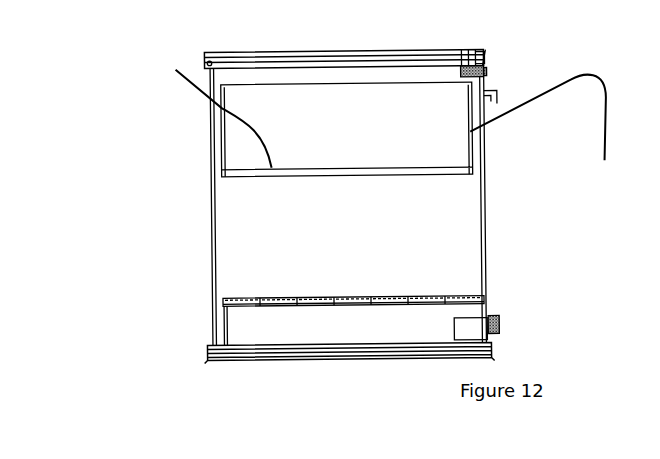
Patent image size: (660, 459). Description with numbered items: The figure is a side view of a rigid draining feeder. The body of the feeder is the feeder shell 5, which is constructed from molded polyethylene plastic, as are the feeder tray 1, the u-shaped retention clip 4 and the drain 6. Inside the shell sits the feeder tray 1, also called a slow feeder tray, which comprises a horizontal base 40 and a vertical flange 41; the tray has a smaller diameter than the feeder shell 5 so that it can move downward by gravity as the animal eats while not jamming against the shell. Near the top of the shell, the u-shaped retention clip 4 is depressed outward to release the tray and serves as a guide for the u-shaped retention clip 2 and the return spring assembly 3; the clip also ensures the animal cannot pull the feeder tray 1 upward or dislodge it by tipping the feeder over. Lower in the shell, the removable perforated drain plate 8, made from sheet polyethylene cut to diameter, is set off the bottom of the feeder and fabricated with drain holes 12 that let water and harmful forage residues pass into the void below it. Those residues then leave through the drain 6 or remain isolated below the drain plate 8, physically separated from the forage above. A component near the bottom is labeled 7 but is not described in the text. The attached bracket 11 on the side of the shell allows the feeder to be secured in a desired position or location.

The feeder tray 1 is at (470, 163).
The u-shaped retention clip 2 is at (458, 62).
The return spring assembly 3 is at (478, 54).
The u-shaped retention clip 4 is at (463, 54).
The feeder shell 5 is at (290, 242).
The drain 6 is at (500, 313).
The bottom box 7 is at (452, 333).
The removable perforated drain plate 8 is at (243, 295).
The bracket 11 is at (500, 87).
The drain holes 12 is at (283, 304).
The horizontal base 40 is at (211, 109).
The vertical flange 41 is at (539, 133).